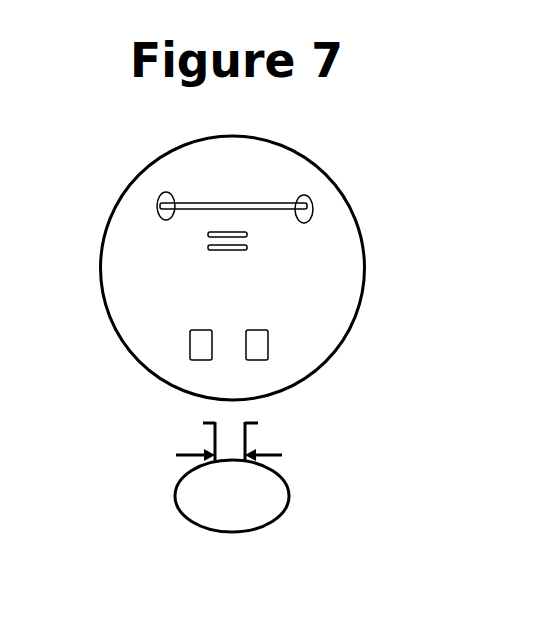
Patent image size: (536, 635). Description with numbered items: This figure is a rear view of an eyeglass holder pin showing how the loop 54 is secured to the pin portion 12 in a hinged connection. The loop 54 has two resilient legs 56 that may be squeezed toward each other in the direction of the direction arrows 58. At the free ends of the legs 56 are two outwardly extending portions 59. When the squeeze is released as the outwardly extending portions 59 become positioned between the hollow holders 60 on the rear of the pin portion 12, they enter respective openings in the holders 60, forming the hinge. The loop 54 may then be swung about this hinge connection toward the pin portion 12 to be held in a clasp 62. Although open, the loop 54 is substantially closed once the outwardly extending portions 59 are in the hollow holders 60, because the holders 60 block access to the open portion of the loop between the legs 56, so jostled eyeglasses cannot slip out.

The pin portion 12 is at (303, 208).
The clasp 62 is at (208, 233).
The hollow holders 60 is at (190, 352).
The outwardly extending portions 59 is at (205, 422).
The resilient legs 56 is at (215, 437).
The direction arrows 58 is at (174, 455).
The loop 54 is at (243, 516).